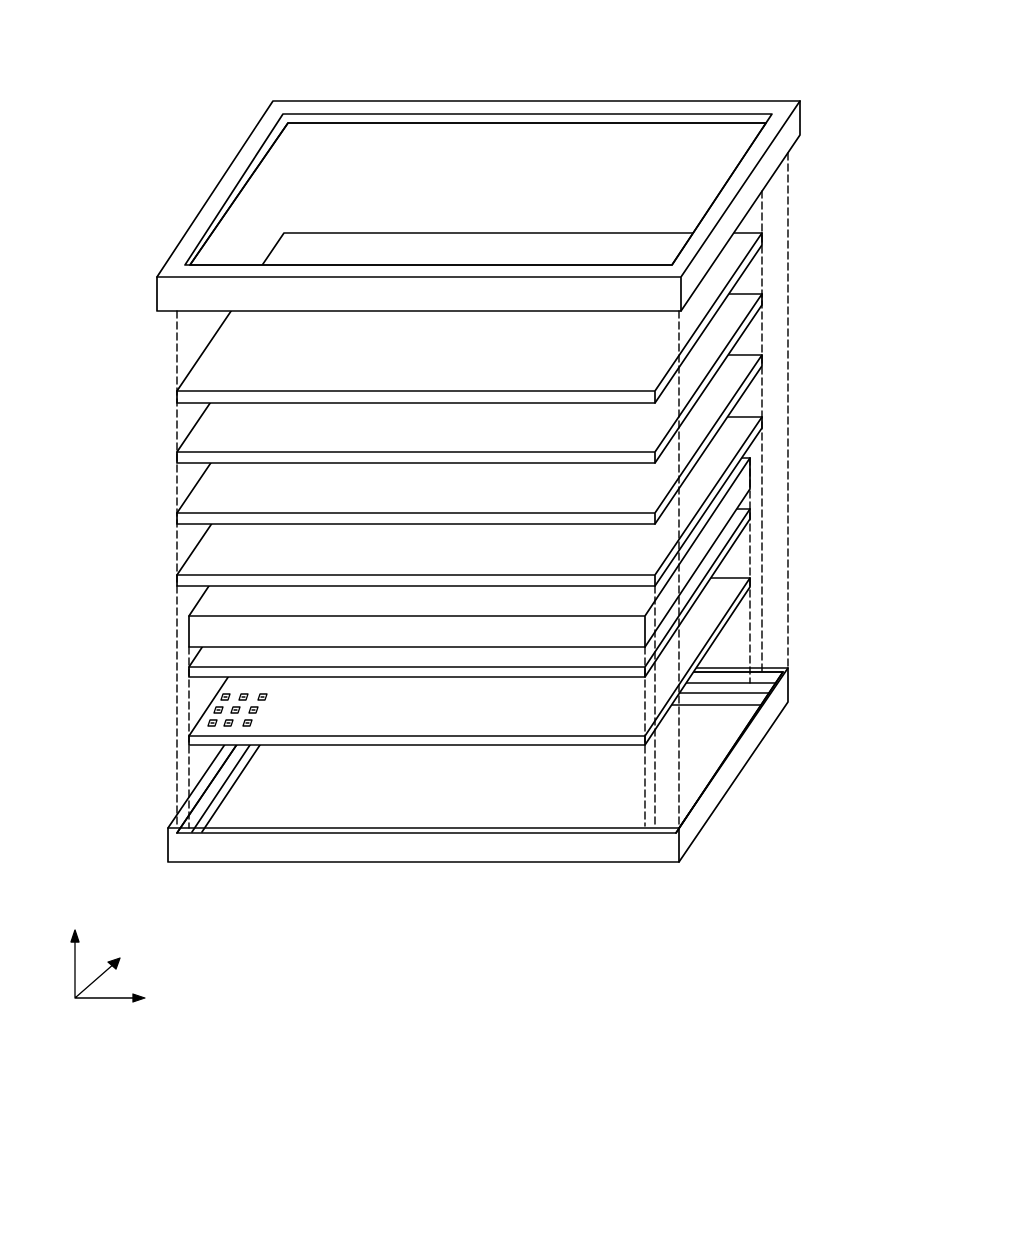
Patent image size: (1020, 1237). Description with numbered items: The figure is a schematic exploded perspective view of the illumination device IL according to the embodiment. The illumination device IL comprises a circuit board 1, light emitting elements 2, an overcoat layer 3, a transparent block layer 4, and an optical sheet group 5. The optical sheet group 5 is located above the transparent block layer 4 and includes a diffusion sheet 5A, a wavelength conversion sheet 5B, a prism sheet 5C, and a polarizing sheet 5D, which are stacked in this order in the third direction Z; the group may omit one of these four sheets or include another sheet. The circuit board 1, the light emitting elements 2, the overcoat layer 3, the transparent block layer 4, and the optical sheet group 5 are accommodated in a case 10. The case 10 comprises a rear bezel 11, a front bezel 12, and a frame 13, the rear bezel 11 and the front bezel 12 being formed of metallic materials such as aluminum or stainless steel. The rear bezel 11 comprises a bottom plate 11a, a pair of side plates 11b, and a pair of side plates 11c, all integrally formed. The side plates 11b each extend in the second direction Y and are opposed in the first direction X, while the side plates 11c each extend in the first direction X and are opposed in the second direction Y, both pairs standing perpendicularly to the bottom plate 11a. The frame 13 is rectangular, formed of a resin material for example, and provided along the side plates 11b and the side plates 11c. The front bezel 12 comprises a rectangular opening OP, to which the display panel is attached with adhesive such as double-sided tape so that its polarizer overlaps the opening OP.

The case 10 is at (100, 275).
The illumination device IL is at (823, 91).
The rear bezel 11 is at (482, 790).
The bottom plate 11a is at (372, 822).
The side plates 11b is at (197, 803).
The side plates 11c is at (720, 678).
The frame 13 is at (238, 766).
The circuit board 1 is at (724, 620).
The light emitting elements 2 is at (255, 722).
The overcoat layer 3 is at (737, 530).
The transparent block layer 4 is at (744, 470).
The optical sheet group 5 is at (537, 409).
The diffusion sheet 5A is at (744, 438).
The wavelength conversion sheet 5B is at (743, 381).
The prism sheet 5C is at (742, 322).
The polarizing sheet 5D is at (522, 318).
The front bezel 12 is at (451, 173).
The opening OP is at (625, 119).